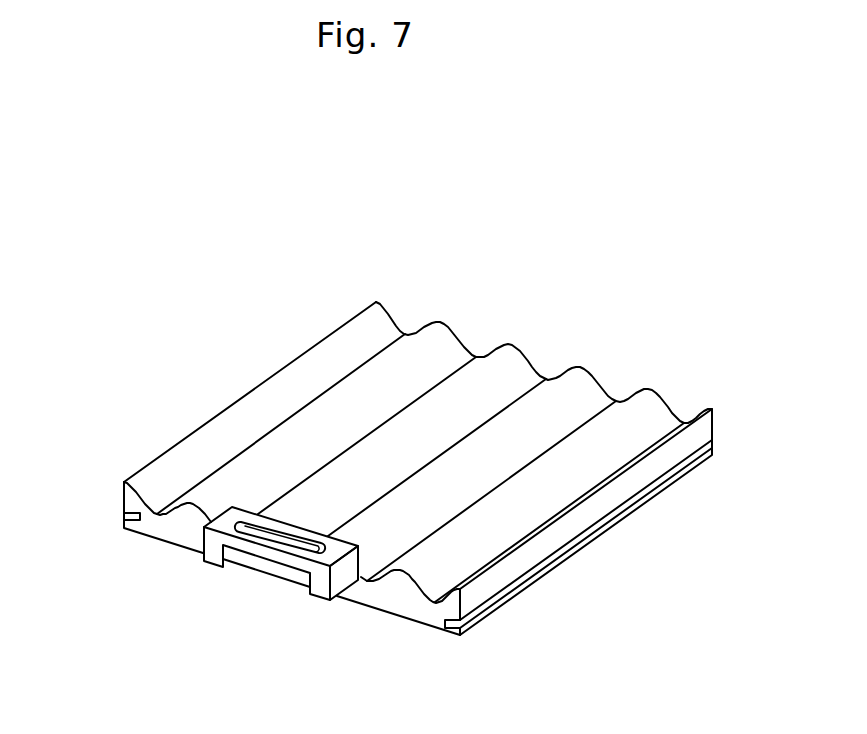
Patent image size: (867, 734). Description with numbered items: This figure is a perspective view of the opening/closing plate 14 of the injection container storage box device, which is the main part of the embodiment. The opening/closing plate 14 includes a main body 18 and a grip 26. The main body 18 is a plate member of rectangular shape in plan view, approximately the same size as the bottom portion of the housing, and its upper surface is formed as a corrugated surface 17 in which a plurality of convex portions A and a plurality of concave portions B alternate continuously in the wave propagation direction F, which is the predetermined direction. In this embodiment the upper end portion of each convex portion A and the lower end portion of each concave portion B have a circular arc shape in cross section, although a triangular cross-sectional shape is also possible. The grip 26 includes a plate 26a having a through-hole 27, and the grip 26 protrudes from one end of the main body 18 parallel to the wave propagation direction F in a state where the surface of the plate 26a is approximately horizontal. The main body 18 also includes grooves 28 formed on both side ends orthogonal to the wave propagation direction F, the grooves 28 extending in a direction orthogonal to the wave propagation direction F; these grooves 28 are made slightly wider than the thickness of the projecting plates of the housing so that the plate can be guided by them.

The opening/closing plate 14 is at (403, 444).
The corrugated surface 17 is at (623, 432).
The main body 18 is at (653, 468).
The grooves 28 is at (121, 519).
The grip 26 is at (283, 600).
The plate 26a is at (338, 552).
The through-hole 27 is at (300, 542).
The convex portions A is at (420, 388).
The concave portions B is at (156, 516).
The wave propagation direction F is at (389, 457).